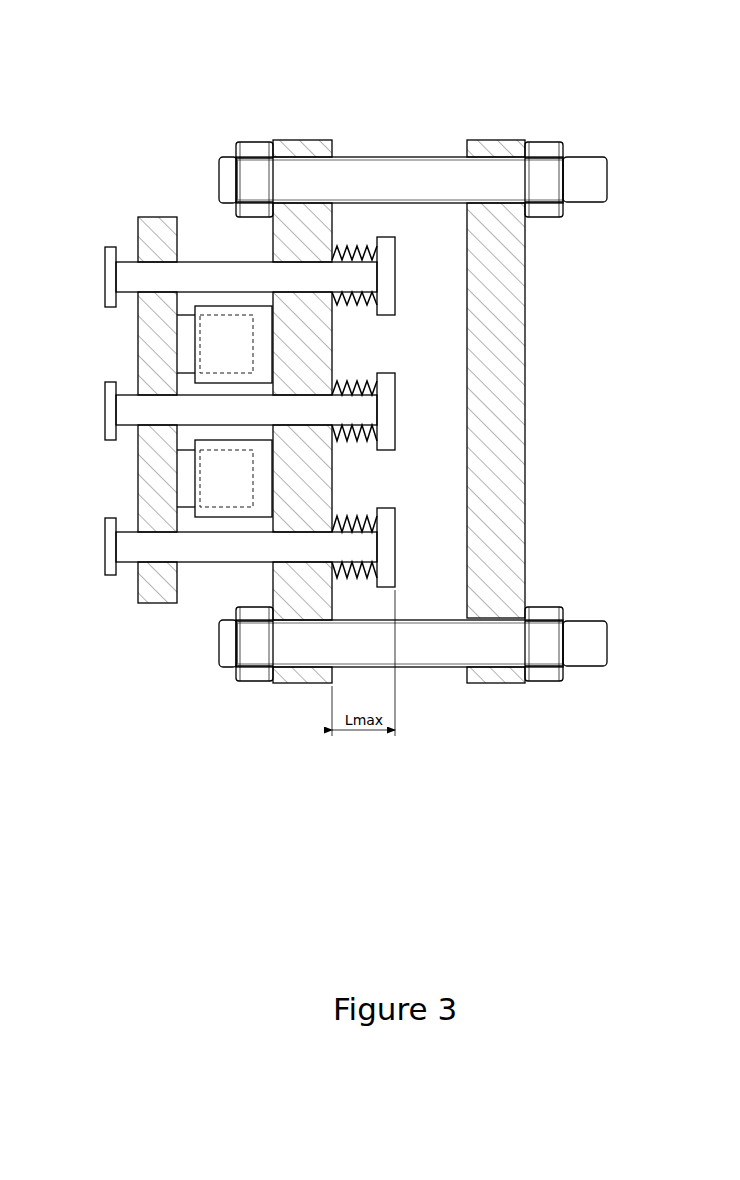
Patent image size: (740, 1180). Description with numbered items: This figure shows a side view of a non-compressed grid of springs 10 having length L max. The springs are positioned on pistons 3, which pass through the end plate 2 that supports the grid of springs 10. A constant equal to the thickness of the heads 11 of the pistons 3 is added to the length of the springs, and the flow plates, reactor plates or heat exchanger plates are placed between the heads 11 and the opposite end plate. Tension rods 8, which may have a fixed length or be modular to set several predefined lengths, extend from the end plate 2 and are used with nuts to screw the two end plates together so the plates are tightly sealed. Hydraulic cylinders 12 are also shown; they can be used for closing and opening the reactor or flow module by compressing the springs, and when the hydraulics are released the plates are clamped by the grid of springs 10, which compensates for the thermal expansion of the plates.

The end plate 2 is at (300, 235).
The piston 3 is at (240, 540).
The tension rod 8 is at (403, 183).
The grid of springs 10 is at (352, 298).
The head 11 is at (382, 427).
The hydraulic cylinder 12 is at (205, 475).